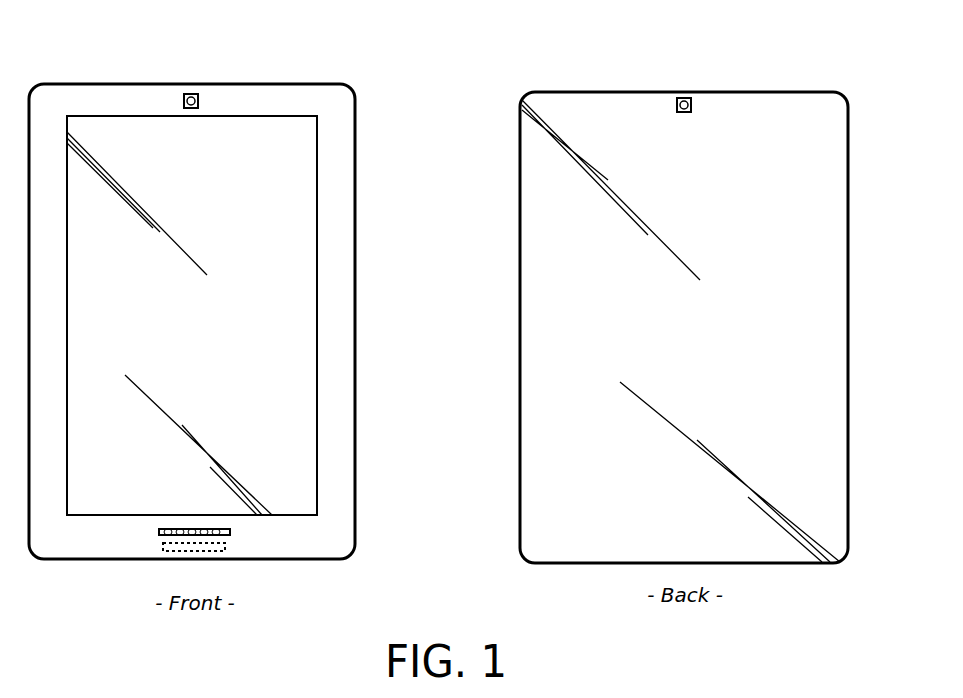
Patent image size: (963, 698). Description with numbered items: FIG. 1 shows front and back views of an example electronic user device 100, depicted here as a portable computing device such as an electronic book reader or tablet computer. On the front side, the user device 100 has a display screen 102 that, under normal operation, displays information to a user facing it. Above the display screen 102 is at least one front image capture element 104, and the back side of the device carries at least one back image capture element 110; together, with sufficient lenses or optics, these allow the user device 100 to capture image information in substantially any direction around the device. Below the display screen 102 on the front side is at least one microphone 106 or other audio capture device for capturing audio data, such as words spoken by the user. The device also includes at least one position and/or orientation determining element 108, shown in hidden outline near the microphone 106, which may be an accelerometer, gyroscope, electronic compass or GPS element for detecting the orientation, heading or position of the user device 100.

The electronic user device 100 is at (840, 67).
The display screen 102 is at (317, 240).
The front image capture element 104 is at (198, 101).
The microphone 106 is at (158, 531).
The position and/or orientation determining element 108 is at (226, 546).
The back image capture element 110 is at (688, 110).